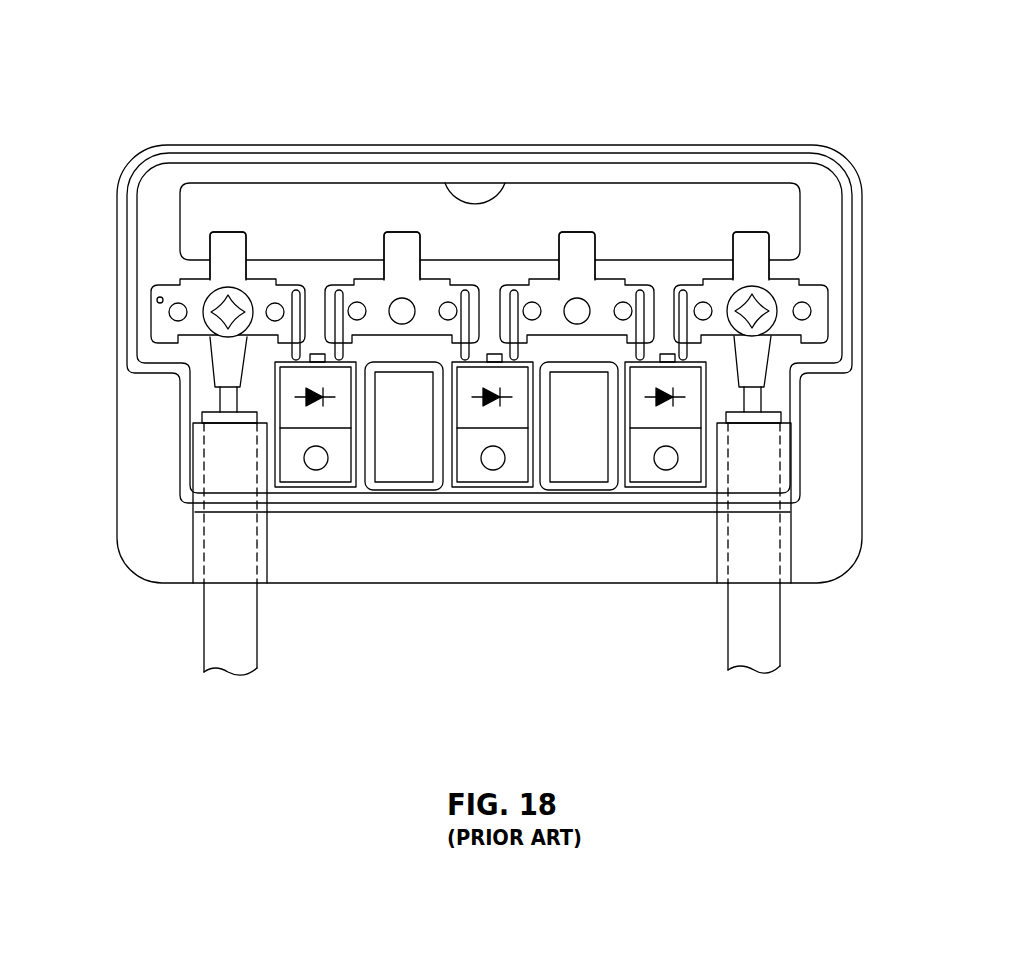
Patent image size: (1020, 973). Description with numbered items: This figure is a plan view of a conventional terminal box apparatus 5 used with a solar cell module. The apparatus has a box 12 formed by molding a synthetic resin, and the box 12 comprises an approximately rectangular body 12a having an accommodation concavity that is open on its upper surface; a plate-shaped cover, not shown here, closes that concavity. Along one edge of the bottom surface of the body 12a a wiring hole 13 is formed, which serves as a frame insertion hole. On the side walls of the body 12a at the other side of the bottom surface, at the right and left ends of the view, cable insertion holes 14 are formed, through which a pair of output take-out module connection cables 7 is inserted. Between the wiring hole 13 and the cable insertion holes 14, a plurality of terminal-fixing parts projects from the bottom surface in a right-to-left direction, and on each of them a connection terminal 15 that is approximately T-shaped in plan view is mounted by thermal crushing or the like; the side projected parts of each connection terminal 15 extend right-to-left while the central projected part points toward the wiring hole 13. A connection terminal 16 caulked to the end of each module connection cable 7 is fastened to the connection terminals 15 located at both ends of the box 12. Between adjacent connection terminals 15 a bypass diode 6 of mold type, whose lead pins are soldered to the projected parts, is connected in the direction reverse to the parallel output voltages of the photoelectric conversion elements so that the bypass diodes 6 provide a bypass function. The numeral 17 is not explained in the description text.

The terminal box apparatus 5 is at (828, 100).
The bypass diode 6 is at (338, 412).
The output take-out module connection cable 7 is at (248, 638).
The box 12 is at (865, 423).
The body 12a is at (862, 238).
The wiring hole 13 is at (506, 182).
The cable insertion hole 14 is at (258, 565).
The connection terminal 15 is at (220, 244).
The connection terminal 16 is at (222, 370).
The bus bar tab 17 is at (207, 312).